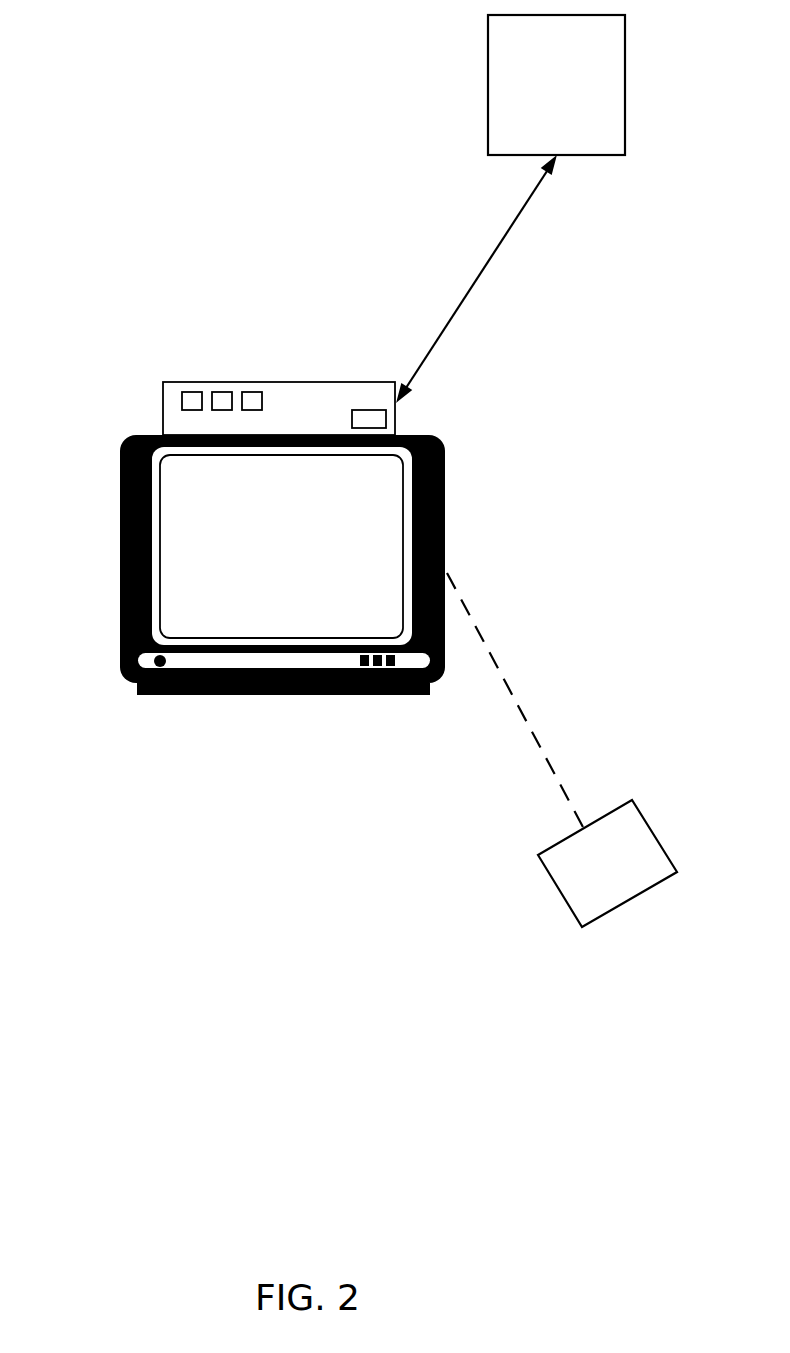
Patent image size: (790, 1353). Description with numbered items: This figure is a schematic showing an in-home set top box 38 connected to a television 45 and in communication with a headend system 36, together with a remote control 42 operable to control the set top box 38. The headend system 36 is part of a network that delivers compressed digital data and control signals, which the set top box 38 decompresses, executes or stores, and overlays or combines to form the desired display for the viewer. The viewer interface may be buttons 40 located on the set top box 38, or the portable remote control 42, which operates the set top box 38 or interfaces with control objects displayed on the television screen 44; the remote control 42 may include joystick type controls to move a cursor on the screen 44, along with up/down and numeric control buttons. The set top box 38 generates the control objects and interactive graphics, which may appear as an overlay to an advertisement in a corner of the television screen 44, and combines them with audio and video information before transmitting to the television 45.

The headend system 36 is at (610, 85).
The set top box 38 is at (296, 382).
The buttons 40 is at (250, 400).
The remote control 42 is at (557, 890).
The television screen 44 is at (193, 532).
The television 45 is at (388, 458).